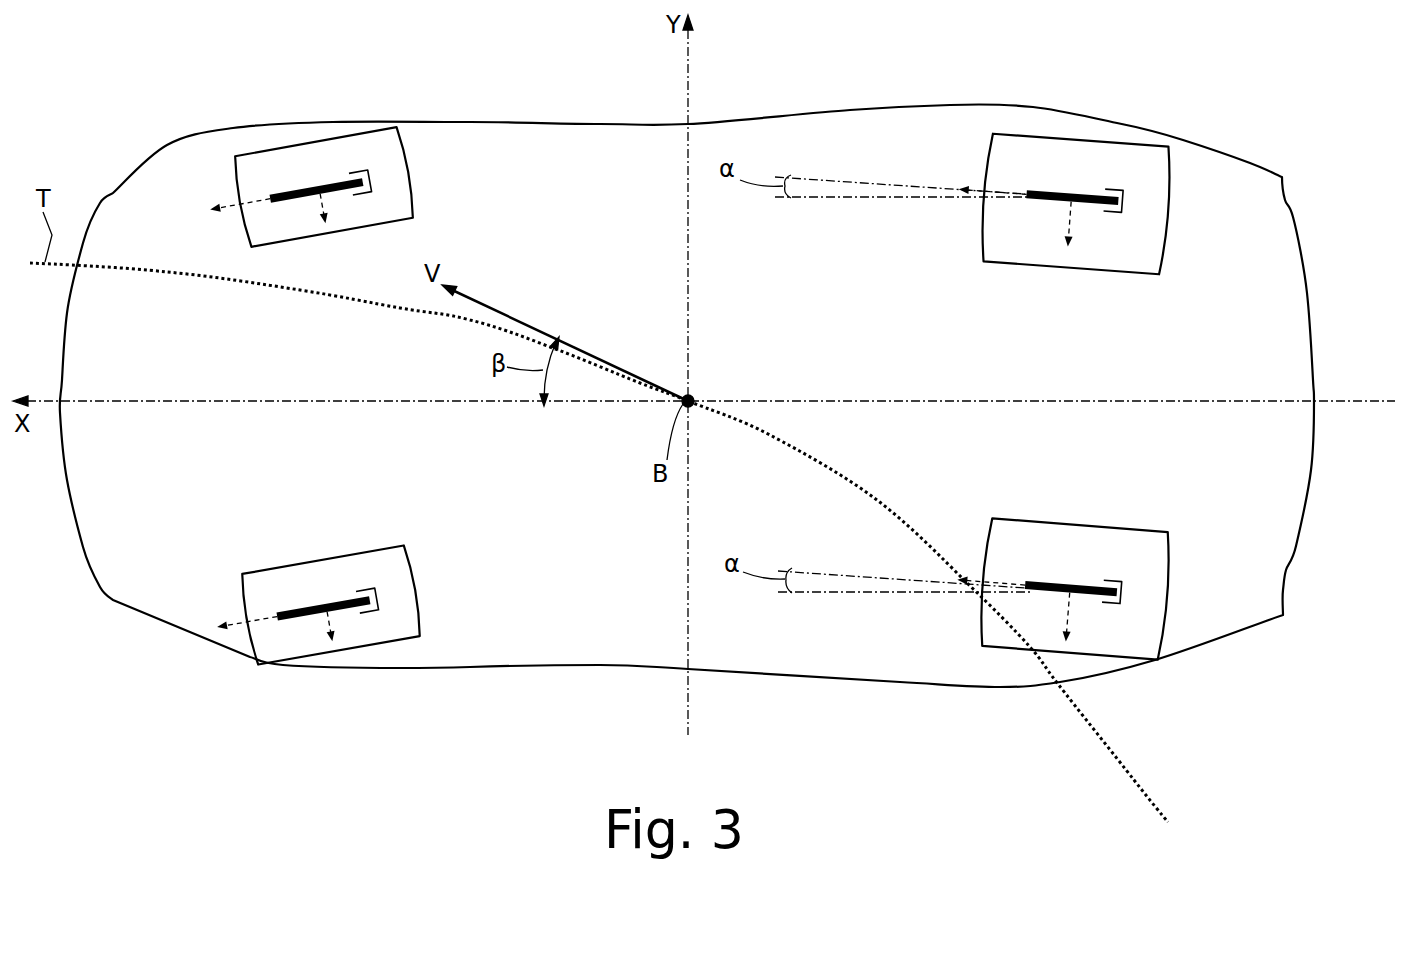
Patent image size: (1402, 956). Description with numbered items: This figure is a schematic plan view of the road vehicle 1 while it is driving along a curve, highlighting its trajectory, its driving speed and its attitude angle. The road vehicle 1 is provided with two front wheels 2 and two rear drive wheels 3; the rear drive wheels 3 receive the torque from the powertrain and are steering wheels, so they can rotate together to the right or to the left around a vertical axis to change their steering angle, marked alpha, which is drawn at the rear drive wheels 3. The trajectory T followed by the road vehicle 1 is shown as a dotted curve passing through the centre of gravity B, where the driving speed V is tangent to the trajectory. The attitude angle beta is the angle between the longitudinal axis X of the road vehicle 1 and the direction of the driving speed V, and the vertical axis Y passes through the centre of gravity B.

The road vehicle 1 is at (1262, 719).
The front wheels 2 is at (399, 152).
The rear drive wheels 3 is at (1157, 158).